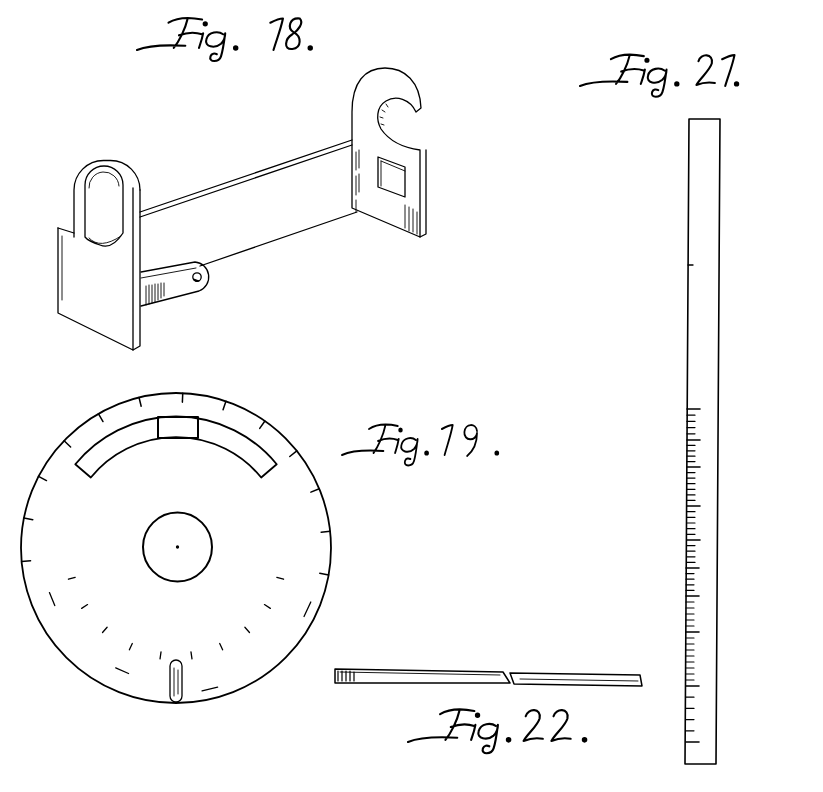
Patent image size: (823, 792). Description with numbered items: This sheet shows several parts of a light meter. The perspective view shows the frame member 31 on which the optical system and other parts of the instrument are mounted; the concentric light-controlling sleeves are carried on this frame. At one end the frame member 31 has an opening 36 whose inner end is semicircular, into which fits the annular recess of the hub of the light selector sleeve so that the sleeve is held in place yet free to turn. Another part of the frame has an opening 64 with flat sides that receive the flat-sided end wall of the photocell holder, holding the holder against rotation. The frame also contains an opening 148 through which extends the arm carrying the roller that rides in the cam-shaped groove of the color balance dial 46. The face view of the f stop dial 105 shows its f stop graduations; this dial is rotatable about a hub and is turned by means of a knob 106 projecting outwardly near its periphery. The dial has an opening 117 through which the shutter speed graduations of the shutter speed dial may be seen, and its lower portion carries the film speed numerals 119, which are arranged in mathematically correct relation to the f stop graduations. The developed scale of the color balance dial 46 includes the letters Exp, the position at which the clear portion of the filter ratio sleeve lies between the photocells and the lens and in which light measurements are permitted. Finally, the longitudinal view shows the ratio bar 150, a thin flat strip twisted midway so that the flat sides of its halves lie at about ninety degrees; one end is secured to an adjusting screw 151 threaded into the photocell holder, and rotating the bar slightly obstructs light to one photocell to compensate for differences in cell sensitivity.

In FIG. 18, the frame member 31 is at (256, 180).
In FIG. 18, the opening 36 is at (395, 113).
In FIG. 18, the opening 64 is at (92, 199).
In FIG. 18, the opening 148 is at (397, 188).
In FIG. 19, the f stop dial 105 is at (332, 512).
In FIG. 19, the knob 106 is at (168, 701).
In FIG. 19, the opening 117 is at (181, 439).
In FIG. 19, the film speed numerals 119 is at (204, 606).
In FIG. 21, the color balance dial 46 is at (688, 332).
In FIG. 22, the ratio bar 150 is at (476, 672).
In FIG. 22, the adjusting screw 151 is at (340, 668).